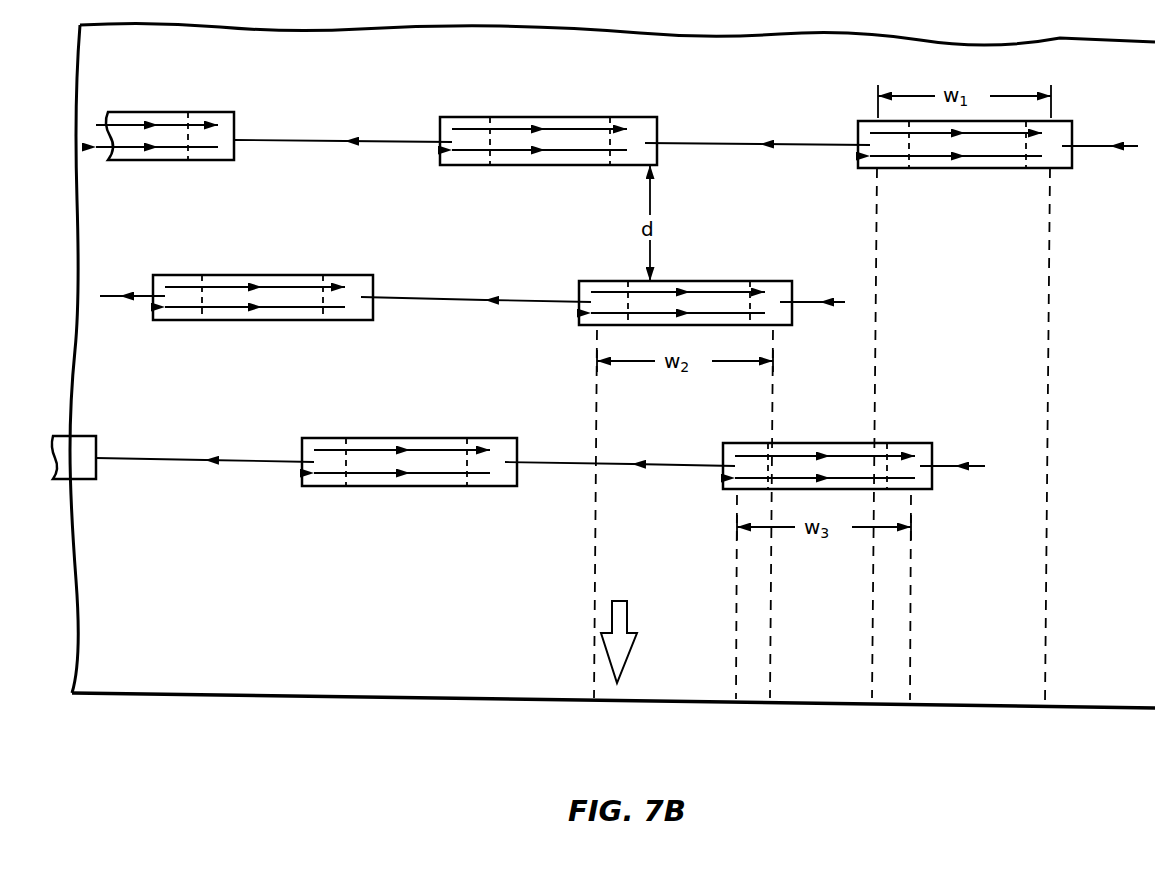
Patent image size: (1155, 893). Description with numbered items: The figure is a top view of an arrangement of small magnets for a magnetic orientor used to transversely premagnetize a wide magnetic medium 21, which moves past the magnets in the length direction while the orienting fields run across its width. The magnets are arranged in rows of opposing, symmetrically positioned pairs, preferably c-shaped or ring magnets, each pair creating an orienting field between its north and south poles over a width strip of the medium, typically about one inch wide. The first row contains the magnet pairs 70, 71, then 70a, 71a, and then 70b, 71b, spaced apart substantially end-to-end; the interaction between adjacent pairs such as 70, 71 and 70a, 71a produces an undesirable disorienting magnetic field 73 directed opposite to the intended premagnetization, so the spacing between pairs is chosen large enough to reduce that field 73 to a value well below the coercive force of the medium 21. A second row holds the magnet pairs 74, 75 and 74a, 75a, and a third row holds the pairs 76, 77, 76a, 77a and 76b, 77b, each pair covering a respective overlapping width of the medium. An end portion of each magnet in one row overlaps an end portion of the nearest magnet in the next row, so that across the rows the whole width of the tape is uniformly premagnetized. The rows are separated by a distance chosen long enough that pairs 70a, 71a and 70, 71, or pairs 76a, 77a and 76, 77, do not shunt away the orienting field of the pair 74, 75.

The magnetic medium 21 is at (965, 701).
The magnet 70 is at (1003, 140).
The magnet 71 is at (1058, 121).
The magnet 70a is at (553, 132).
The magnet 71a is at (558, 117).
The magnet 70b is at (190, 128).
The magnet 71b is at (175, 112).
The magnetic field 73 is at (714, 143).
The magnet 74 is at (712, 296).
The magnet 75 is at (722, 281).
The magnet 74a is at (250, 290).
The magnet 75a is at (285, 275).
The magnet 76 is at (849, 458).
The magnet 77 is at (893, 443).
The magnet 76a is at (425, 453).
The magnet 77a is at (437, 438).
The magnet 76b is at (125, 448).
The magnet 77b is at (82, 436).